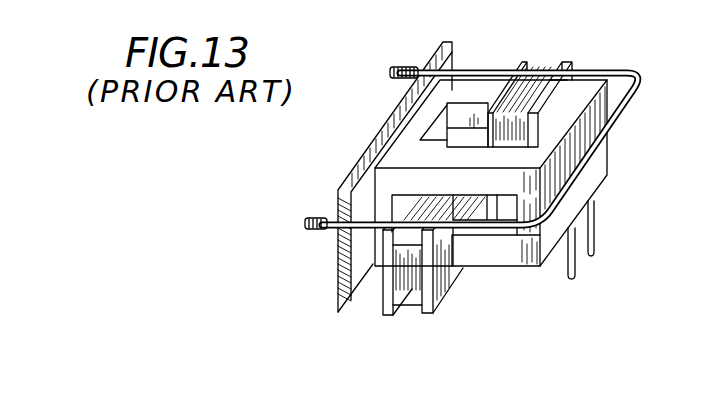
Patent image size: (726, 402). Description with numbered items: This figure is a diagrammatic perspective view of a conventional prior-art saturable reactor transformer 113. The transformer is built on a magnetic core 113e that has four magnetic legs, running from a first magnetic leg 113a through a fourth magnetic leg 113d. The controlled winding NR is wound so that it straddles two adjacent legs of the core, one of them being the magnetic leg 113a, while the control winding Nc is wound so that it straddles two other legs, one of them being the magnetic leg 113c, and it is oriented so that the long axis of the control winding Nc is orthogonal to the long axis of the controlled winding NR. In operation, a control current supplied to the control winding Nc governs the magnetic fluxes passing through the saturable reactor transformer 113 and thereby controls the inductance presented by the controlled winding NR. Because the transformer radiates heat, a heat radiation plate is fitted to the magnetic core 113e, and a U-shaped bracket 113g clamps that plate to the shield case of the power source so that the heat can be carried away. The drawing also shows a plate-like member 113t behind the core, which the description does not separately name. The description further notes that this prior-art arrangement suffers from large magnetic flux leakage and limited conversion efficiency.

The saturable reactor transformer 113 is at (654, 71).
The magnetic leg 113a is at (497, 250).
The magnetic leg 113c is at (473, 87).
The magnetic leg 113d is at (443, 158).
The magnetic core 113e is at (533, 260).
The U-shaped bracket 113g is at (623, 111).
The circuit board 113t is at (352, 172).
The control winding Nc is at (548, 82).
The controlled winding NR is at (413, 297).